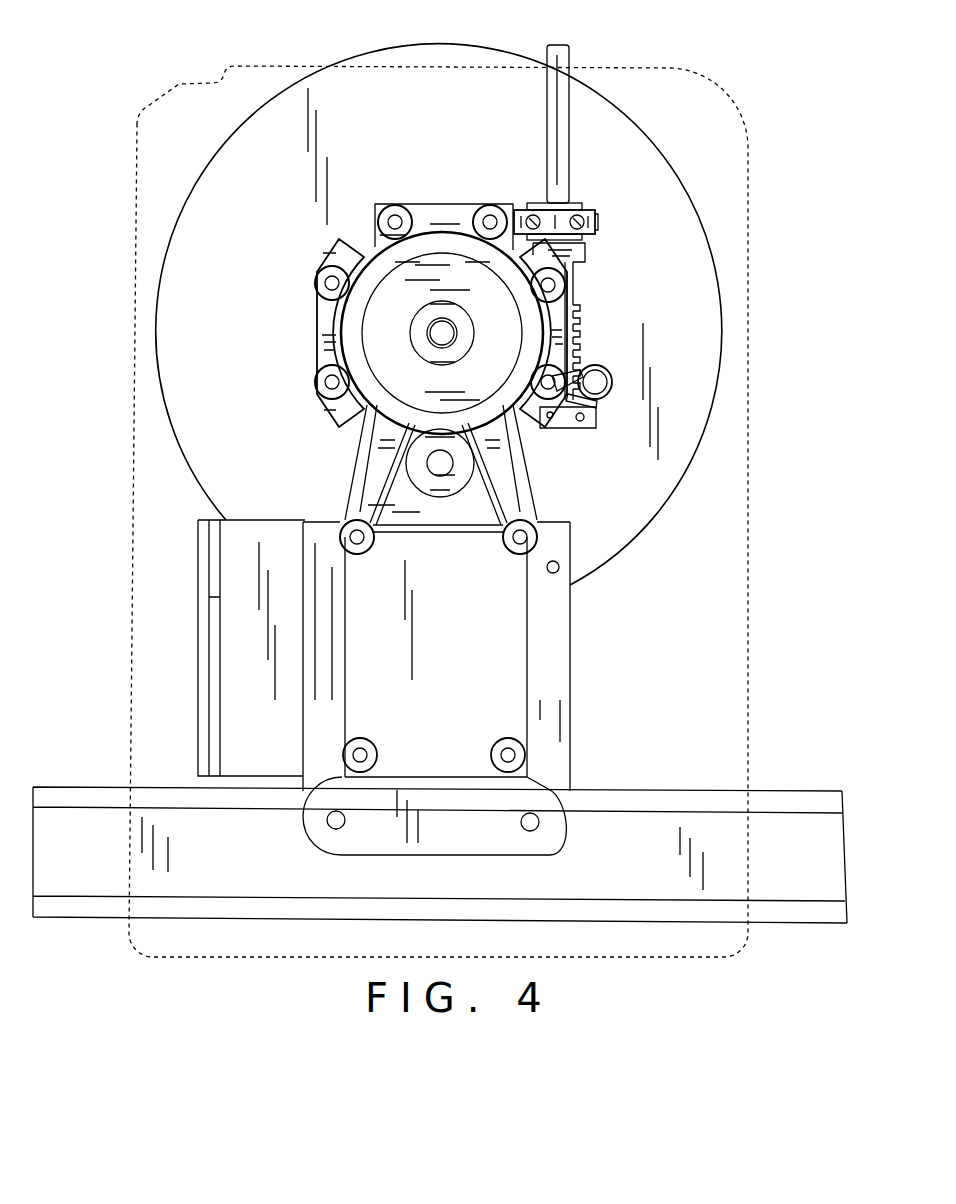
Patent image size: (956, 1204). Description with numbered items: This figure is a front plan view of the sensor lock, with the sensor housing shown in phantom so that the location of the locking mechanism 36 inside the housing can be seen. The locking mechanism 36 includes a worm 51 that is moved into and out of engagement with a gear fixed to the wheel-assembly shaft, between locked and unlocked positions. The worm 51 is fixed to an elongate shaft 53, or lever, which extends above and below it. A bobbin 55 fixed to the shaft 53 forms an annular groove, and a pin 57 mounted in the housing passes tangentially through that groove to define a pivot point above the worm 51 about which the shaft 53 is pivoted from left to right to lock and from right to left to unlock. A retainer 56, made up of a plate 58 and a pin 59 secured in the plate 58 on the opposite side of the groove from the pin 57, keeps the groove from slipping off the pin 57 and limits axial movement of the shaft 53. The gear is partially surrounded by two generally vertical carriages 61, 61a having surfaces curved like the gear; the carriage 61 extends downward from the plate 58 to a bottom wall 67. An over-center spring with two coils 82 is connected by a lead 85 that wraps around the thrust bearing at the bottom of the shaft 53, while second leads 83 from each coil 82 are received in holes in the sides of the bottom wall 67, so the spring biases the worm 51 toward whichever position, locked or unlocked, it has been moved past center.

The locking mechanism 36 is at (600, 305).
The worm 51 is at (573, 348).
The shaft 53 is at (565, 88).
The bobbin 55 is at (577, 210).
The retainer 56 is at (590, 223).
The pin 57 is at (532, 214).
The plate 58 is at (597, 225).
The pin 59 is at (603, 213).
The carriage 61 is at (560, 333).
The carriage 61a is at (327, 345).
The bottom wall 67 is at (597, 422).
The coils 82 is at (613, 380).
The second leads 83 is at (597, 403).
The lead 85 is at (572, 380).